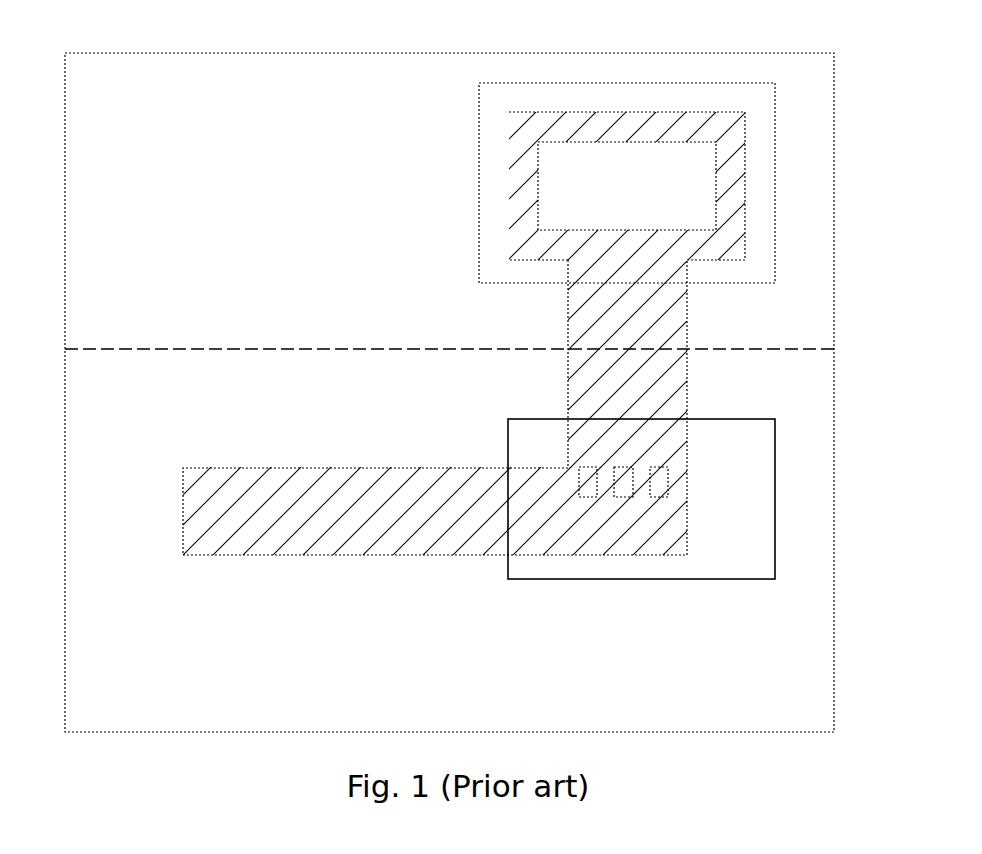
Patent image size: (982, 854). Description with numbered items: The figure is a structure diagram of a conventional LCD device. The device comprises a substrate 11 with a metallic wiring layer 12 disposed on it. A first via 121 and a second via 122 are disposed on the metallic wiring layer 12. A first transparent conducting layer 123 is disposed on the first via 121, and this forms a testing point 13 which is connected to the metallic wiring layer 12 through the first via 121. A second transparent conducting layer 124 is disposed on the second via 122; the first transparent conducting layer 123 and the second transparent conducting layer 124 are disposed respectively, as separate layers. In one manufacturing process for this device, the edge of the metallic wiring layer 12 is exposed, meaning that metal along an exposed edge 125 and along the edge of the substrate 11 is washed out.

The substrate 11 is at (773, 53).
The metallic wiring layer 12 is at (327, 467).
The testing point 13 is at (372, 76).
The first via 121 is at (557, 167).
The second via 122 is at (657, 482).
The first transparent conducting layer 123 is at (480, 212).
The second transparent conducting layer 124 is at (538, 420).
The exposed edge 125 is at (300, 348).